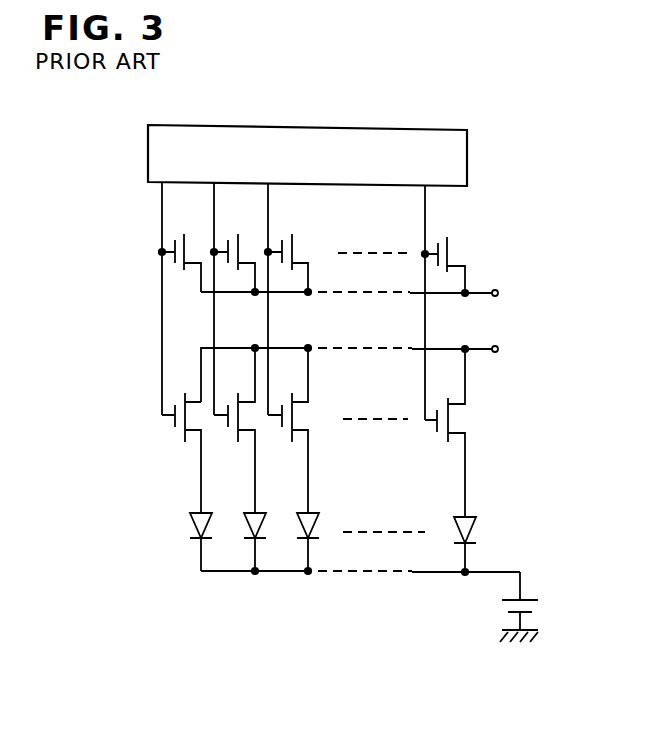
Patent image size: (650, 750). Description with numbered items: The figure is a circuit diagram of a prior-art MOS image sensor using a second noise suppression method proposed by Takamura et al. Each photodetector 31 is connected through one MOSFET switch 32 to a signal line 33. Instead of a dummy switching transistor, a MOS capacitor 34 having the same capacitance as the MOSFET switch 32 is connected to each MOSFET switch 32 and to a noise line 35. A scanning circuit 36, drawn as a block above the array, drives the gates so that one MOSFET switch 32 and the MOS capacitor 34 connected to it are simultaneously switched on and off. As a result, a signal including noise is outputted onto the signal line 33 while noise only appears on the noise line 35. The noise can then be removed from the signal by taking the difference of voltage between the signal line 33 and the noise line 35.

The photodetector 31 is at (192, 545).
The MOSFET switch 32 is at (172, 430).
The signal line 33 is at (506, 357).
The MOS capacitor 34 is at (177, 272).
The noise line 35 is at (506, 297).
The scanning circuit 36 is at (338, 128).